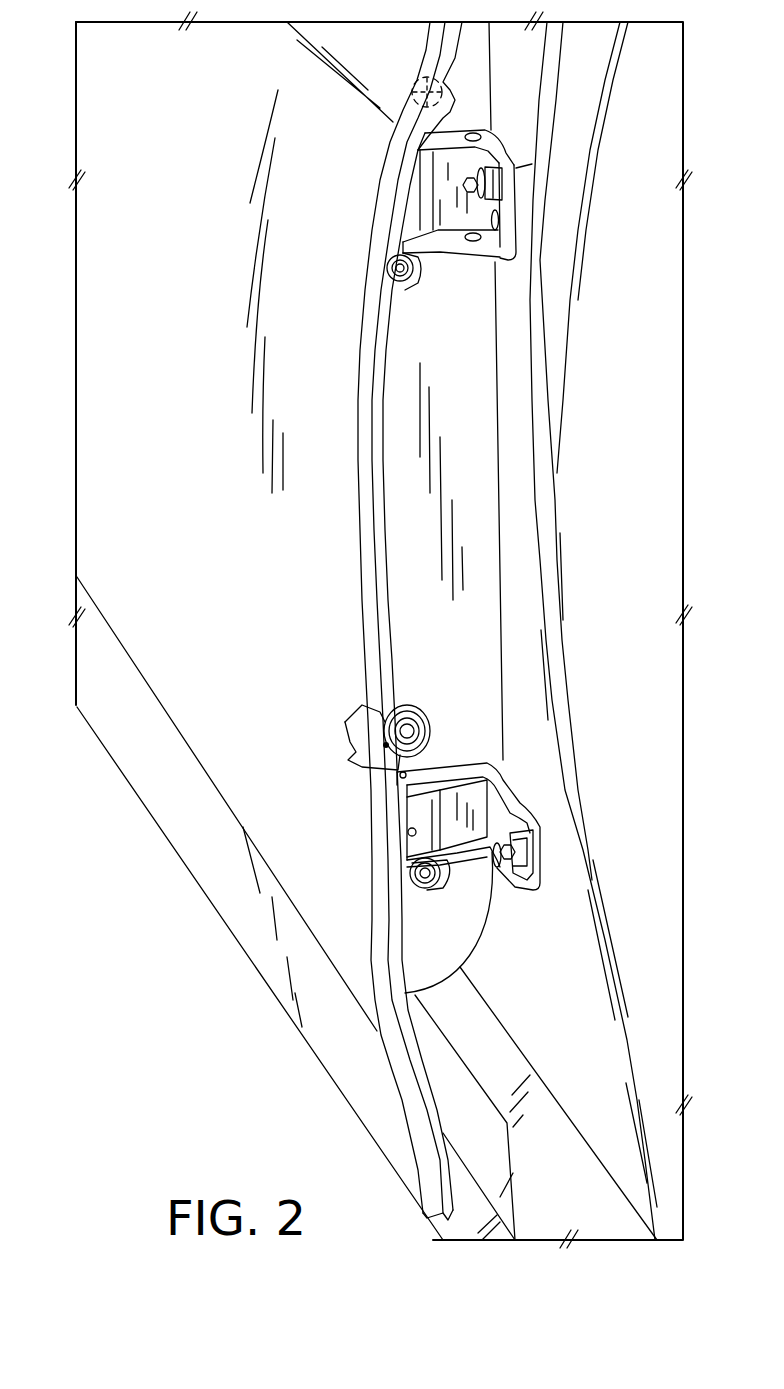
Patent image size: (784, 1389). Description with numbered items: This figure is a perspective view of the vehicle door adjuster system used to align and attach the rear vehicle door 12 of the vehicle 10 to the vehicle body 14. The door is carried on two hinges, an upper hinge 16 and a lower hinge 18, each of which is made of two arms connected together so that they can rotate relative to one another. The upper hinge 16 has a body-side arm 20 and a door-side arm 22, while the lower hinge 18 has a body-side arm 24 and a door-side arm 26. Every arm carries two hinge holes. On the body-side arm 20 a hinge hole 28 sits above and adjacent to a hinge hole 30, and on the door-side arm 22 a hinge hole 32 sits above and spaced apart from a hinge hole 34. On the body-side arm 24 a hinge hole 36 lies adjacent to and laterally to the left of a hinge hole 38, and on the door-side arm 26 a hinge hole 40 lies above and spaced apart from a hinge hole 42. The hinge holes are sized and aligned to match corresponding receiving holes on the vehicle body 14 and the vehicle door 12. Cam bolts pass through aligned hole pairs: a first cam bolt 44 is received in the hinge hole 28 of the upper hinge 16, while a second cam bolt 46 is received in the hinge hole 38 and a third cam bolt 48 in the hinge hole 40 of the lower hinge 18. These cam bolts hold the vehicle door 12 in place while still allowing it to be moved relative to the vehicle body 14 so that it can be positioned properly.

The vehicle 10 is at (128, 950).
The rear vehicle door 12 is at (190, 692).
The vehicle body 14 is at (604, 1041).
The upper hinge 16 is at (457, 272).
The lower hinge 18 is at (460, 721).
The body-side arm 20 is at (497, 140).
The door-side arm 22 is at (427, 192).
The body-side arm 24 is at (517, 798).
The door-side arm 26 is at (362, 772).
The hinge hole 28 is at (520, 167).
The hinge hole 30 is at (500, 221).
The hinge hole 32 is at (412, 95).
The hinge hole 34 is at (403, 285).
The hinge hole 36 is at (517, 817).
The hinge hole 38 is at (528, 846).
The hinge hole 40 is at (425, 715).
The hinge hole 42 is at (430, 867).
The first cam bolt 44 is at (463, 183).
The second cam bolt 46 is at (490, 863).
The third cam bolt 48 is at (385, 745).